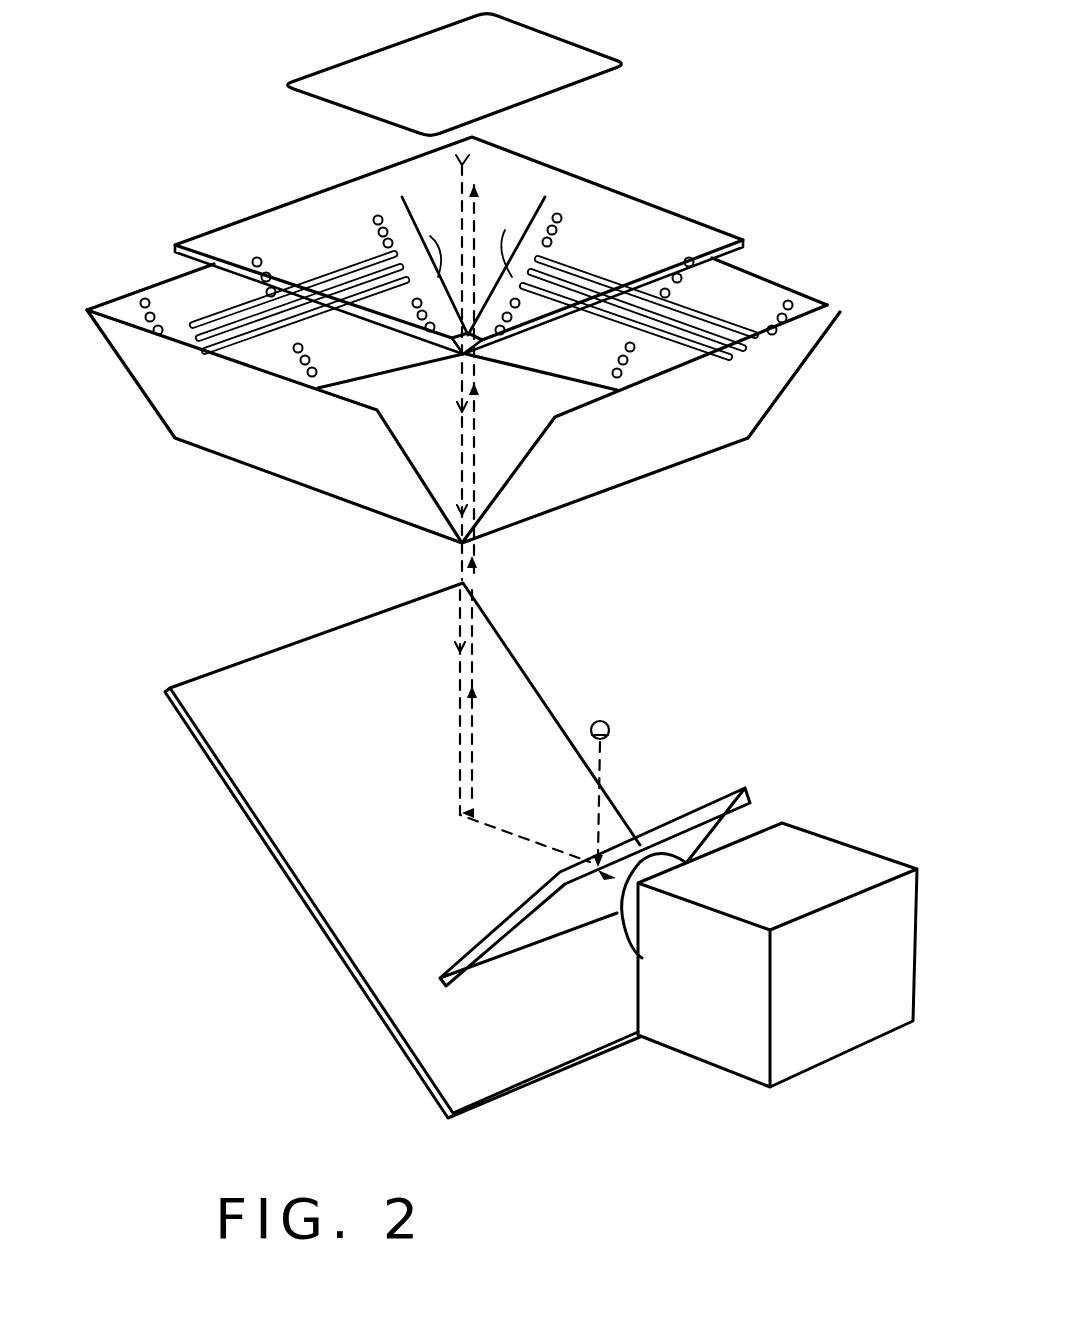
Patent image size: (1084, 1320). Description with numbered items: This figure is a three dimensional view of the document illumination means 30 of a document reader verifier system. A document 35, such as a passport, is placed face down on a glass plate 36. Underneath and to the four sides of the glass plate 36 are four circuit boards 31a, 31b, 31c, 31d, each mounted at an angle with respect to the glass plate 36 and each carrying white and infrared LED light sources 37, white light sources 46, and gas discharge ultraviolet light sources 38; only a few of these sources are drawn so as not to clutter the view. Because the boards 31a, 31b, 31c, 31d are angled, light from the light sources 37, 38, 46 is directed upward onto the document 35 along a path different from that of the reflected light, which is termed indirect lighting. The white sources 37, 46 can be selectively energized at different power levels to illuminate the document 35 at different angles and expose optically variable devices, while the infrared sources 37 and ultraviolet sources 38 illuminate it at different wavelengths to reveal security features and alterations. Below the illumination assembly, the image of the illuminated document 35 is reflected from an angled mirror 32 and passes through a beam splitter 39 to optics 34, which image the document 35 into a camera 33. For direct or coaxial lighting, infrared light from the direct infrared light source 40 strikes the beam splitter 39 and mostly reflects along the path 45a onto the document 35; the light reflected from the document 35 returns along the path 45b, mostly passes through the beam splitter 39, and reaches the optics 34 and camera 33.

The optical sensor assembly 30 is at (888, 585).
The circuit board 31a is at (787, 280).
The circuit board 31b is at (782, 400).
The circuit board 31c is at (123, 378).
The circuit board 31d is at (135, 290).
The angled mirror 32 is at (245, 657).
The camera 33 is at (850, 832).
The optics 34 is at (630, 935).
The document 35 is at (567, 33).
The glass plate 36 is at (650, 200).
The white and infrared LED light sources 37 is at (408, 203).
The gas discharge ultraviolet light sources 38 is at (473, 266).
The beam splitter 39 is at (752, 790).
The direct infrared light source 40 is at (612, 722).
The incident light path 45a is at (490, 192).
The reflected light path 45b is at (473, 160).
The white light sources 46 is at (317, 352).